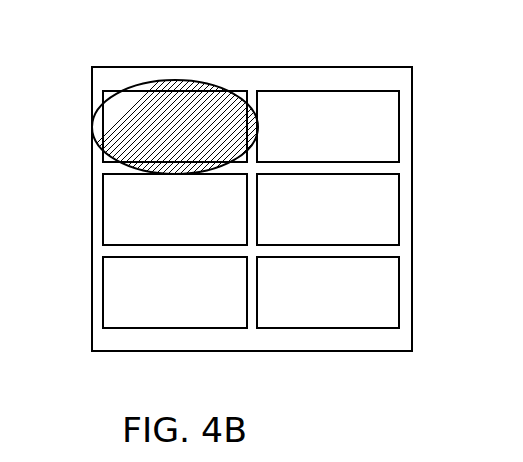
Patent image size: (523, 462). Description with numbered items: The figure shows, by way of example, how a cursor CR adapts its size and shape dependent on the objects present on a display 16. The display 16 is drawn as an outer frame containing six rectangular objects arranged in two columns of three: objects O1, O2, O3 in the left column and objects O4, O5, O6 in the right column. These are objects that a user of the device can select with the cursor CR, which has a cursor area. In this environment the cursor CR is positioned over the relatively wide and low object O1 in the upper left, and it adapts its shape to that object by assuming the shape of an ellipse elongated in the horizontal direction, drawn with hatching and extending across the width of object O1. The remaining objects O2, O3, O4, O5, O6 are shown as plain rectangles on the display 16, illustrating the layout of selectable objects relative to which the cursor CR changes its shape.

The display 16 is at (353, 67).
The object O1 is at (103, 163).
The object O2 is at (103, 223).
The object O3 is at (103, 294).
The object O4 is at (399, 115).
The fifth object region O5 is at (399, 205).
The sixth object region O6 is at (399, 289).
The cursor CR is at (185, 81).